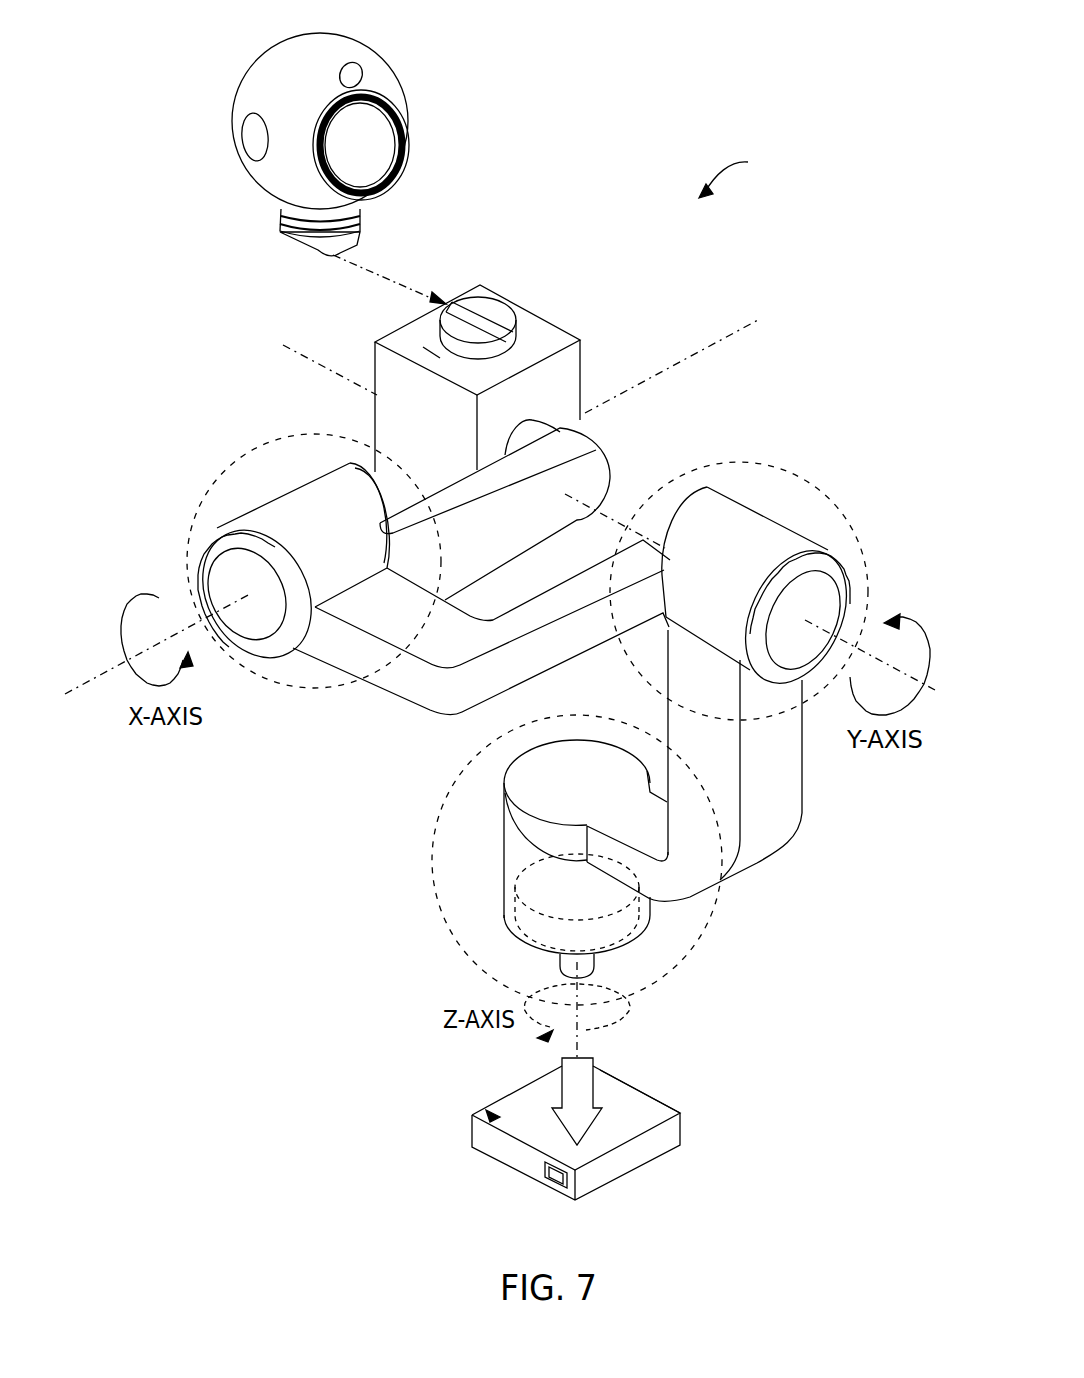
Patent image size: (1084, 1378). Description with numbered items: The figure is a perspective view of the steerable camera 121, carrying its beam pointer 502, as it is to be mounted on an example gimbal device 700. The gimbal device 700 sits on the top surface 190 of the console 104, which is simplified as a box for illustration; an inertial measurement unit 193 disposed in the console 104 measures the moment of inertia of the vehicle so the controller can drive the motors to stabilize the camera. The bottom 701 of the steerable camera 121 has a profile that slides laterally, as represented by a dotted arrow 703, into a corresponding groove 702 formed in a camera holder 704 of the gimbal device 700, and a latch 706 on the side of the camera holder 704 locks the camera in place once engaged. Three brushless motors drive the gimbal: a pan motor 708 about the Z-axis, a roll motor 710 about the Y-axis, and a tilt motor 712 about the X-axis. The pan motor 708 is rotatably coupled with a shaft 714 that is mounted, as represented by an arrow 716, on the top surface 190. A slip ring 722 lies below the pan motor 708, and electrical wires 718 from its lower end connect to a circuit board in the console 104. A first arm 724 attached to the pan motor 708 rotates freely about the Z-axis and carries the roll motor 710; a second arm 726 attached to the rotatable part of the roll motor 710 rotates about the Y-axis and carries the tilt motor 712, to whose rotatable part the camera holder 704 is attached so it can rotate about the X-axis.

The steerable camera 121 is at (254, 83).
The beam pointer 502 is at (356, 79).
The bottom of the steerable camera 701 is at (345, 255).
The dotted arrow 703 is at (403, 277).
The groove 702 is at (490, 323).
The camera holder 704 is at (573, 367).
The latch 706 is at (427, 347).
The gimbal device 700 is at (744, 172).
The tilt motor 712 is at (227, 470).
The roll motor 710 is at (813, 487).
The second arm 726 is at (410, 680).
The first arm 724 is at (780, 750).
The pan motor 708 is at (447, 812).
The shaft 714 is at (512, 865).
The slip ring 722 is at (623, 920).
The electrical wires 718 is at (583, 962).
The arrow 716 is at (575, 1080).
The top surface 190 is at (498, 1116).
The console 104 is at (645, 1123).
The inertial measurement unit 193 is at (553, 1177).